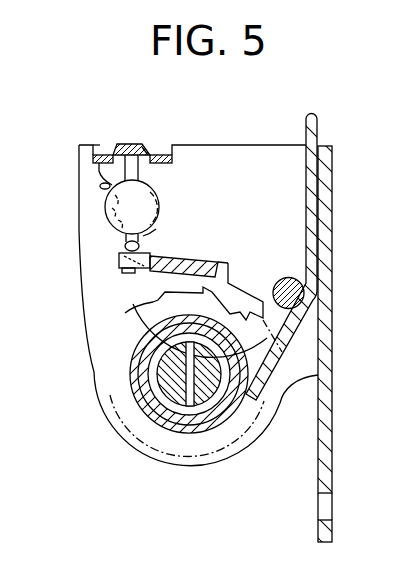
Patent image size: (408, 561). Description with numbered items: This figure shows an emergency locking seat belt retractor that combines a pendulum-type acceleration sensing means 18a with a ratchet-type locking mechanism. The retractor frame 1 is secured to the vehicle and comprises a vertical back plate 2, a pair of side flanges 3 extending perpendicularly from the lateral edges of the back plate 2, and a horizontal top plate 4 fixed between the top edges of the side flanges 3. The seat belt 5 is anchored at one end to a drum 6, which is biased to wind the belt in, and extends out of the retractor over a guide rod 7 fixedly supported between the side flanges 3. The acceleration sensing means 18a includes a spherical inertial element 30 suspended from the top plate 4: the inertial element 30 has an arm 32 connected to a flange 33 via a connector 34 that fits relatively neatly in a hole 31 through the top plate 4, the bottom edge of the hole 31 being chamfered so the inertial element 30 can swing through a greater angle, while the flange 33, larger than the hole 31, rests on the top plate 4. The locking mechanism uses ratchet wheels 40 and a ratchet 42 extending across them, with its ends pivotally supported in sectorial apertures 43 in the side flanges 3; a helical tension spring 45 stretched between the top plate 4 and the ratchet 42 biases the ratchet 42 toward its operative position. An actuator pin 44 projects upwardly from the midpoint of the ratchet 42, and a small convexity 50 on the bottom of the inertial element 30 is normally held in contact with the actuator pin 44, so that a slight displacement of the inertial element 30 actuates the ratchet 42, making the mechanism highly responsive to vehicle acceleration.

The frame 1 is at (309, 328).
The back plate 2 is at (325, 448).
The side flanges 3 is at (305, 343).
The top plate 4 is at (108, 152).
The seat belt 5 is at (137, 396).
The drum 6 is at (168, 400).
The guide rod 7 is at (283, 279).
The acceleration sensing means 18a is at (98, 142).
The spherical inertial element 30 is at (161, 208).
The hole 31 is at (104, 172).
The arm 32 is at (140, 178).
The flange 33 is at (135, 145).
The connector 34 is at (146, 158).
The ratchet wheels 40 is at (125, 328).
The ratchet 42 is at (156, 262).
The sectorial apertures 43 is at (140, 250).
The actuator pin 44 is at (122, 243).
The helical tension spring 45 is at (103, 186).
The convexity 50 is at (150, 236).